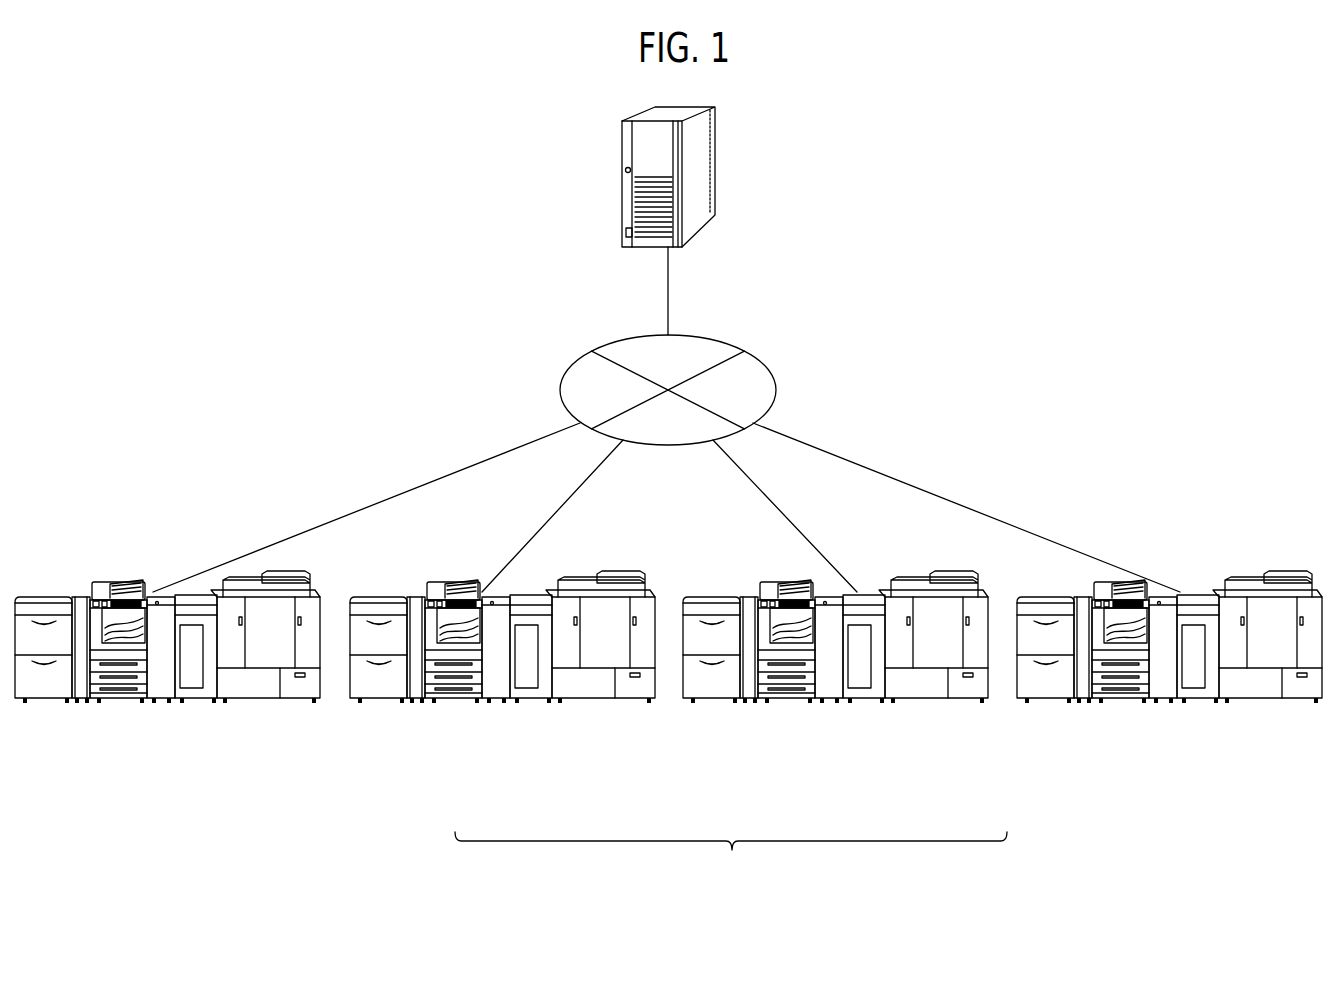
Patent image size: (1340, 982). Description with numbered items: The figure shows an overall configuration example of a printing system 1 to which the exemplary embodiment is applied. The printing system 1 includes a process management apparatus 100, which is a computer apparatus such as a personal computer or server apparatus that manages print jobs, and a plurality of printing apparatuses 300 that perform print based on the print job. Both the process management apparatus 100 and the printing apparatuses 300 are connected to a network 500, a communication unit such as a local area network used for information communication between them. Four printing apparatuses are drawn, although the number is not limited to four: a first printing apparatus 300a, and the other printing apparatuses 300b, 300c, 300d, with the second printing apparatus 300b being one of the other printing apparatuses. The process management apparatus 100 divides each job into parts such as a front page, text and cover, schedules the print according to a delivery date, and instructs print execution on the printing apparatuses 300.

The printing system 1 is at (1138, 162).
The process management apparatus 100 is at (717, 160).
The network 500 is at (777, 382).
The printing apparatuses 300 is at (668, 763).
The first printing apparatus 300a is at (263, 700).
The second printing apparatus 300b is at (530, 700).
The other printing apparatus 300c is at (807, 700).
The other printing apparatus 300d is at (1130, 698).